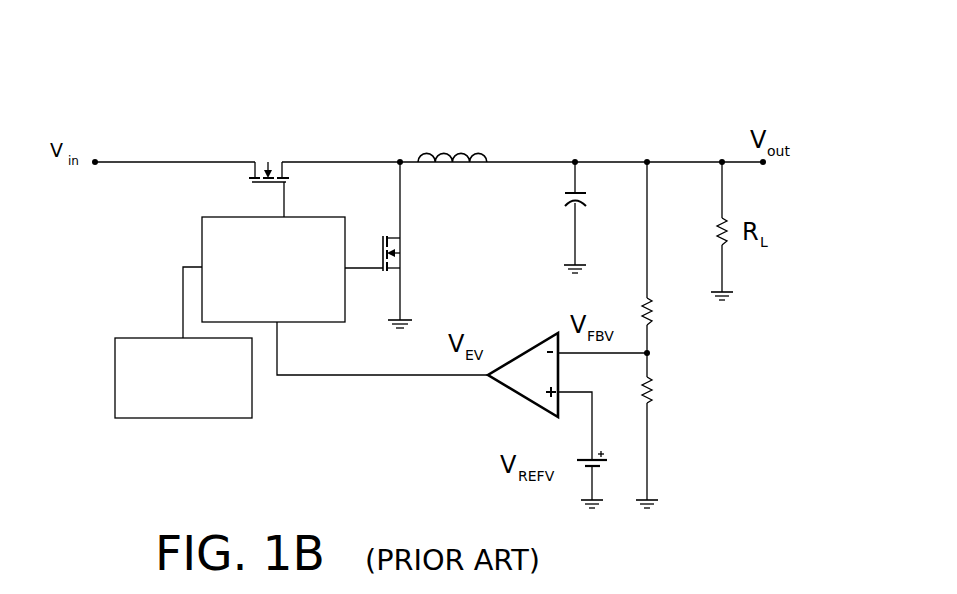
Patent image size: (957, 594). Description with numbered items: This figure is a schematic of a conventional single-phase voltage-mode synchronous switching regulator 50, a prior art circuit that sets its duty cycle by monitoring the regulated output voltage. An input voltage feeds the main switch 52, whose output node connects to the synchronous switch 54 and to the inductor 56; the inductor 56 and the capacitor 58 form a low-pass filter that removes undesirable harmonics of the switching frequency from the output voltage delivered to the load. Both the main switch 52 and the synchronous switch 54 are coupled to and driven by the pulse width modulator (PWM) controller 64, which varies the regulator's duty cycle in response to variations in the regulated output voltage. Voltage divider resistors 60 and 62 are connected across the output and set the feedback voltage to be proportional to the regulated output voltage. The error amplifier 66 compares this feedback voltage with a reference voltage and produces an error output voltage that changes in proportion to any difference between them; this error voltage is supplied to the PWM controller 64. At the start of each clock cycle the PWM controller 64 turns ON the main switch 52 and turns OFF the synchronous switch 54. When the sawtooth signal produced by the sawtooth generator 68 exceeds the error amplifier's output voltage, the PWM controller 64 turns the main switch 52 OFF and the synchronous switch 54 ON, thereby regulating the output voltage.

The single-phase voltage-mode synchronous switching regulator 50 is at (565, 86).
The main switch 52 is at (269, 174).
The synchronous switch 54 is at (394, 245).
The inductor 56 is at (443, 141).
The capacitor 58 is at (553, 217).
The voltage divider resistor 60 is at (669, 257).
The voltage divider resistor 62 is at (665, 429).
The pulse width modulator (PWM) controller 64 is at (202, 232).
The error amplifier 66 is at (498, 385).
The sawtooth generator 68 is at (156, 419).